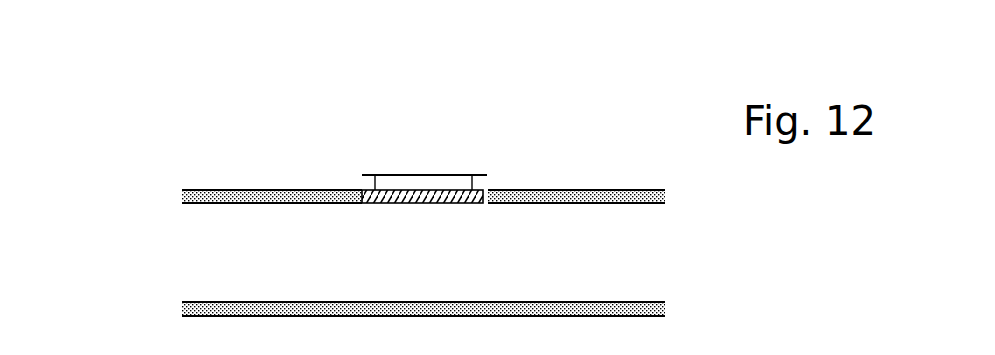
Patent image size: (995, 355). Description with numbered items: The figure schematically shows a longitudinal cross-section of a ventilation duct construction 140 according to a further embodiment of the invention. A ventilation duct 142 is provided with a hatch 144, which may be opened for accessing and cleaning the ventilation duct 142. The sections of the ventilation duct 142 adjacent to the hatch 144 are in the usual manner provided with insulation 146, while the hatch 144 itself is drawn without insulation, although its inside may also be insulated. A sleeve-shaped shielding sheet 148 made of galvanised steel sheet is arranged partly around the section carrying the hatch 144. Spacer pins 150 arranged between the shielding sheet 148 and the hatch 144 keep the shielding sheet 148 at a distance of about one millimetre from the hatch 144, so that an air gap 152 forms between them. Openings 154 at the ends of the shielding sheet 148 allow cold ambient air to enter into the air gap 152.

The ventilation duct construction 140 is at (181, 99).
The ventilation duct 142 is at (235, 248).
The hatch 144 is at (452, 200).
The insulation 146 is at (237, 195).
The shielding sheet 148 is at (428, 175).
The spacer pins 150 is at (472, 182).
The air gap 152 is at (403, 185).
The openings 154 is at (358, 180).